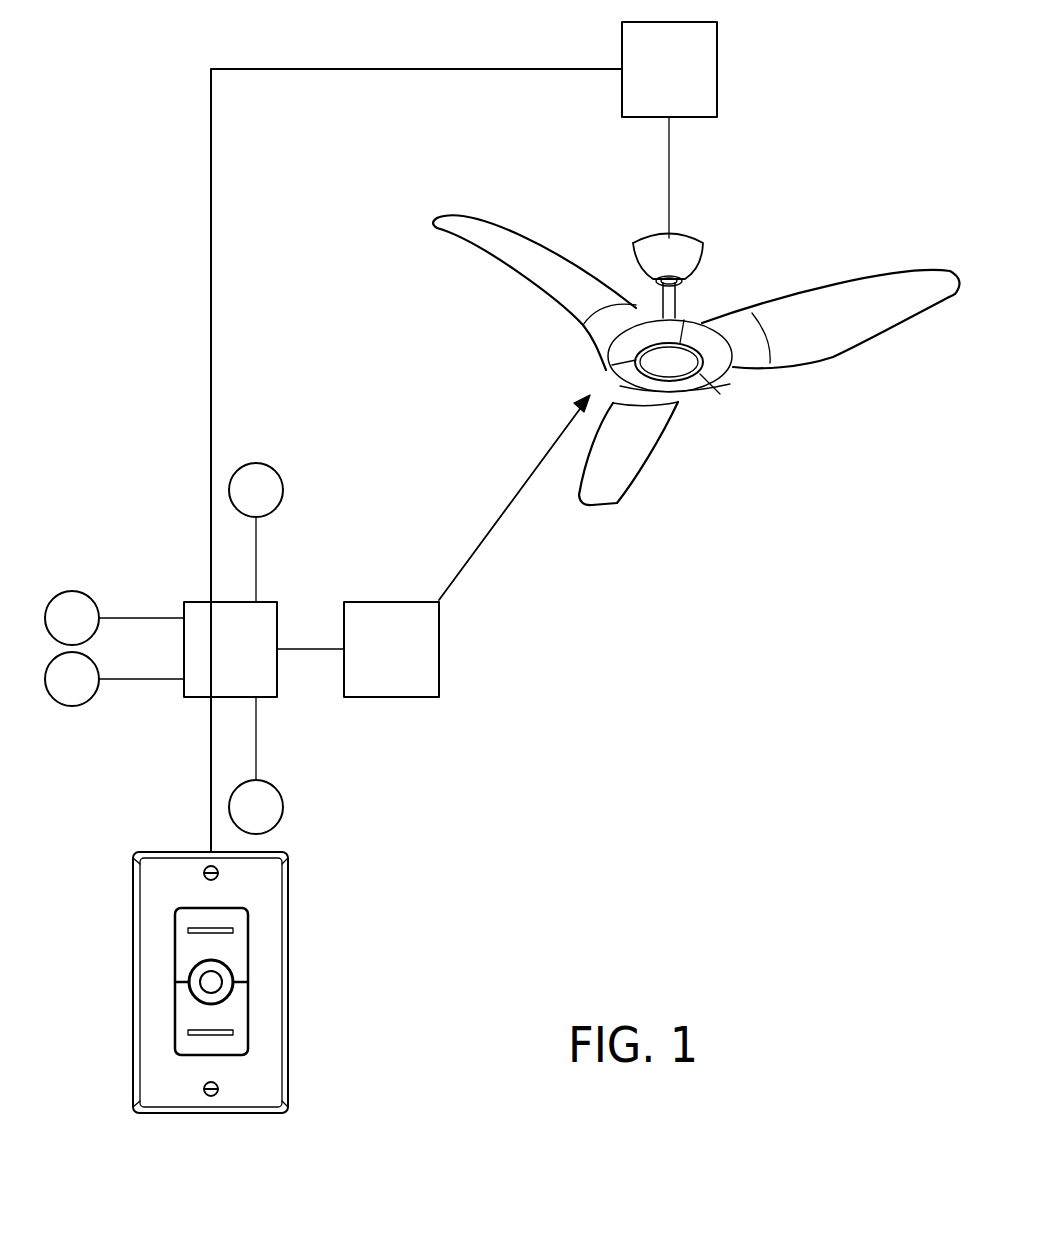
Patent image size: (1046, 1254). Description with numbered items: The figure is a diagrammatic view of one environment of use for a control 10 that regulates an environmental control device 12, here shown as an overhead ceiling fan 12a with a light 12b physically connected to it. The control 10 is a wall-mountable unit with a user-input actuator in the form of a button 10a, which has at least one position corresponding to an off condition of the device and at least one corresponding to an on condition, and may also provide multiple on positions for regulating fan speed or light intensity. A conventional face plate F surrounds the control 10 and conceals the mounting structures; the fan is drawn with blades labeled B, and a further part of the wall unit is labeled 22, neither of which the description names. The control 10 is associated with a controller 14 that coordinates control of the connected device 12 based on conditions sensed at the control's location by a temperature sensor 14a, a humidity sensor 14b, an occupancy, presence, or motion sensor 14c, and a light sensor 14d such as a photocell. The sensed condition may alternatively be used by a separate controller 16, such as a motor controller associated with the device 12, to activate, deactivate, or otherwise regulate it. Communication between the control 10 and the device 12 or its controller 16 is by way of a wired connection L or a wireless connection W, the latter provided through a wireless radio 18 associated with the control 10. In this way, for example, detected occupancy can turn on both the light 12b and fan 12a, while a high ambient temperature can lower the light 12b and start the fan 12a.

The control 10 is at (268, 1014).
The button 10a is at (248, 975).
The environmental control device 12 is at (679, 336).
The fan 12a is at (833, 357).
The light 12b is at (681, 369).
The controller 14 is at (254, 660).
The temperature sensor 14a is at (284, 484).
The humidity sensor 14b is at (82, 591).
The occupancy, presence, or motion sensor 14c is at (75, 706).
The light sensor 14d is at (283, 806).
The separate controller 16 is at (692, 80).
The wireless radio 18 is at (414, 660).
The faceplate 22 is at (288, 1050).
The wired connection L is at (293, 68).
The fan blade B is at (455, 218).
The wireless connection W is at (508, 510).
The face plate F is at (288, 915).